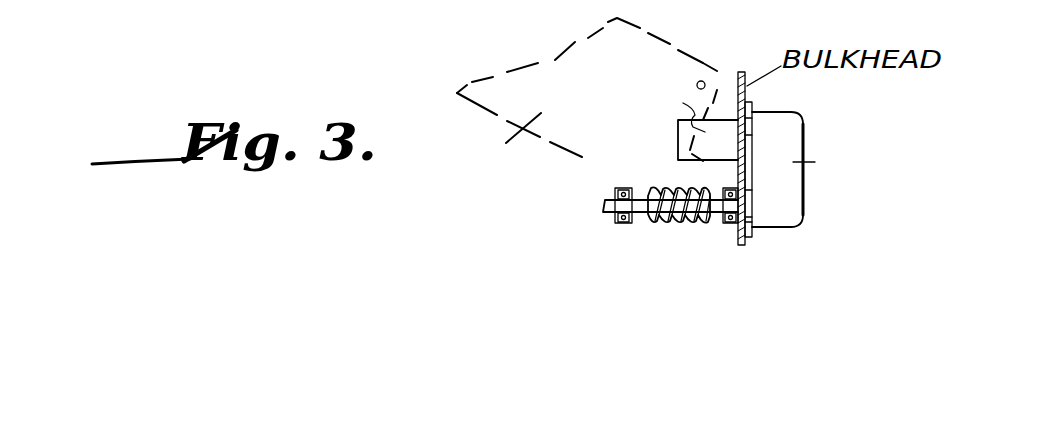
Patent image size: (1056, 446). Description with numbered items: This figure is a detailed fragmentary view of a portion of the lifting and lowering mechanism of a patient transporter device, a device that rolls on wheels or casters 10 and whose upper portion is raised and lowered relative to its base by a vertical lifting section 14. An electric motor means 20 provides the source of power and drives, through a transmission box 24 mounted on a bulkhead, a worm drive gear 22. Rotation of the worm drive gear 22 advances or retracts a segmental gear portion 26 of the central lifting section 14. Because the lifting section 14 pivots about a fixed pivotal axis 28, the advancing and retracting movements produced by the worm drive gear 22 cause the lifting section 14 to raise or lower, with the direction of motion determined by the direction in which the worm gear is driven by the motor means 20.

The wheels or casters 10 is at (301, 41).
The vertical lifting section 14 is at (515, 148).
The electric motor means 20 is at (678, 143).
The worm drive gear 22 is at (687, 223).
The transmission box 24 is at (790, 132).
The segmental gear portion 26 is at (660, 185).
The fixed pivotal axis 28 is at (706, 92).